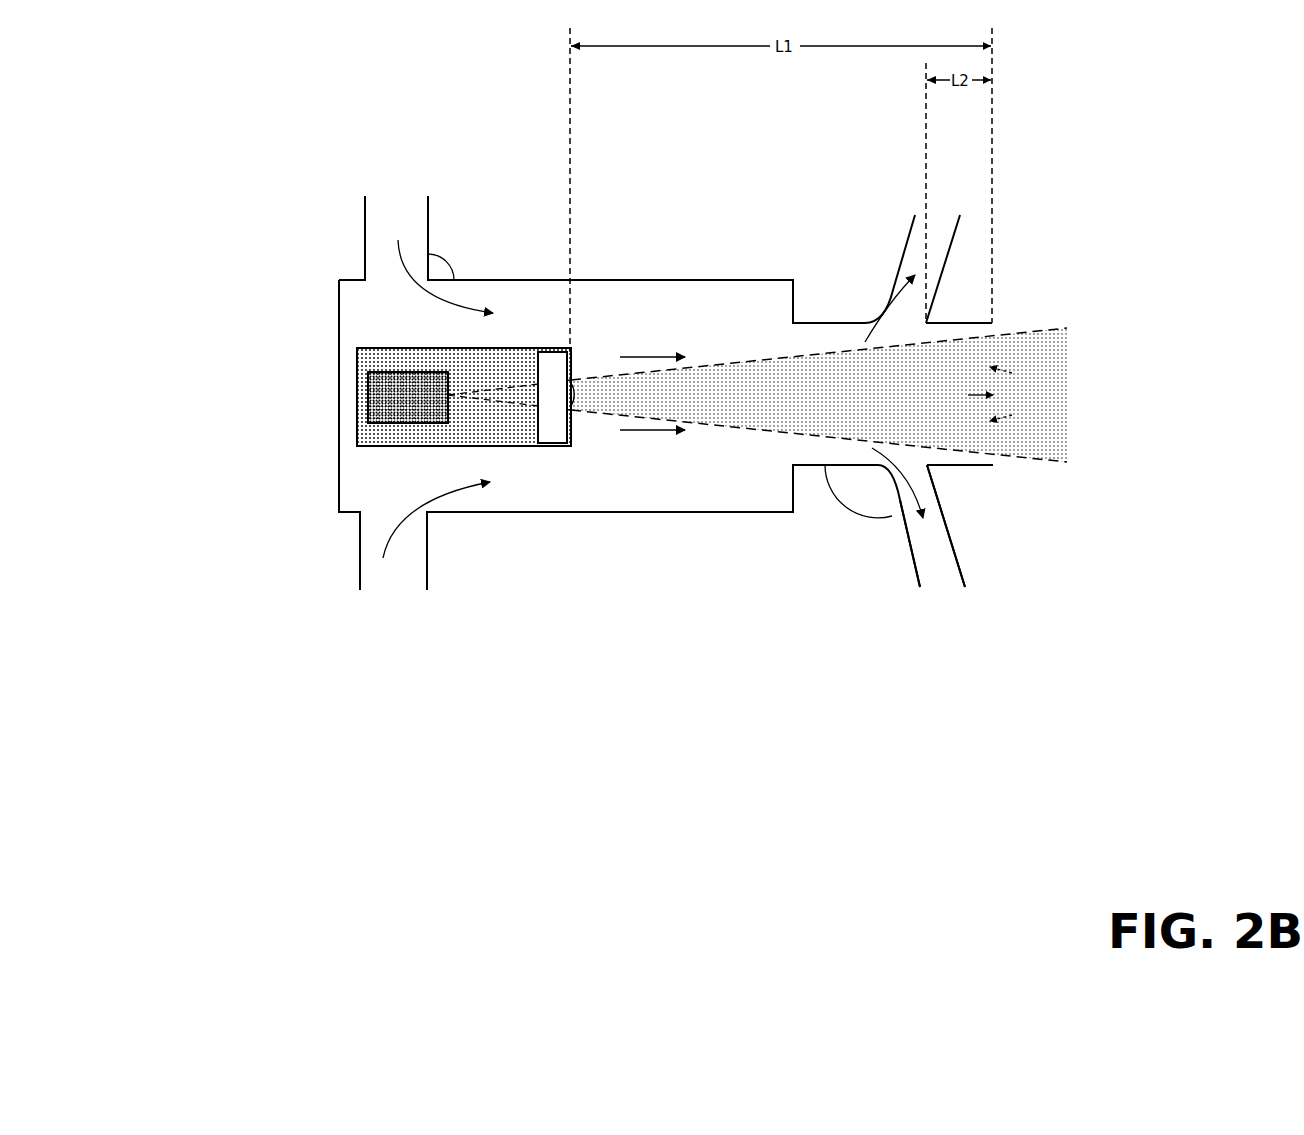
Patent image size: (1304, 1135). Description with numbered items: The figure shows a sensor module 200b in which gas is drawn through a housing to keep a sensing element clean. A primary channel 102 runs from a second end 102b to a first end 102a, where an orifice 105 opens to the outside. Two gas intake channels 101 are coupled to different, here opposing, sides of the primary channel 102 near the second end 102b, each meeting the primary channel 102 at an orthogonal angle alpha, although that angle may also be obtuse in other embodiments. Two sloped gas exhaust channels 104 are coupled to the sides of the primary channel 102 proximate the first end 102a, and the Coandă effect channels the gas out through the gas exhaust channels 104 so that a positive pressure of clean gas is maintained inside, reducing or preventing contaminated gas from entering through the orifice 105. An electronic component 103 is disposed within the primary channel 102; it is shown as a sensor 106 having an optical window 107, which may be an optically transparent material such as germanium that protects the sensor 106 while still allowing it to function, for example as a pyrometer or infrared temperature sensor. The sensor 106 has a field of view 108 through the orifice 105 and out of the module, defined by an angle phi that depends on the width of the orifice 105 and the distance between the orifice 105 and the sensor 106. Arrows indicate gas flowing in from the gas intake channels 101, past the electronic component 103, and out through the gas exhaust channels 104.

The sensor module 200b is at (236, 163).
The gas intake channel 101 is at (398, 205).
The primary channel 102 is at (685, 280).
The first end 102a is at (996, 322).
The second end 102b is at (334, 310).
The electronic component 103 is at (358, 398).
The gas exhaust channel 104 is at (953, 550).
The orifice 105 is at (993, 458).
The sensor 106 is at (370, 418).
The optical window 107 is at (550, 348).
The field of view 108 is at (770, 375).